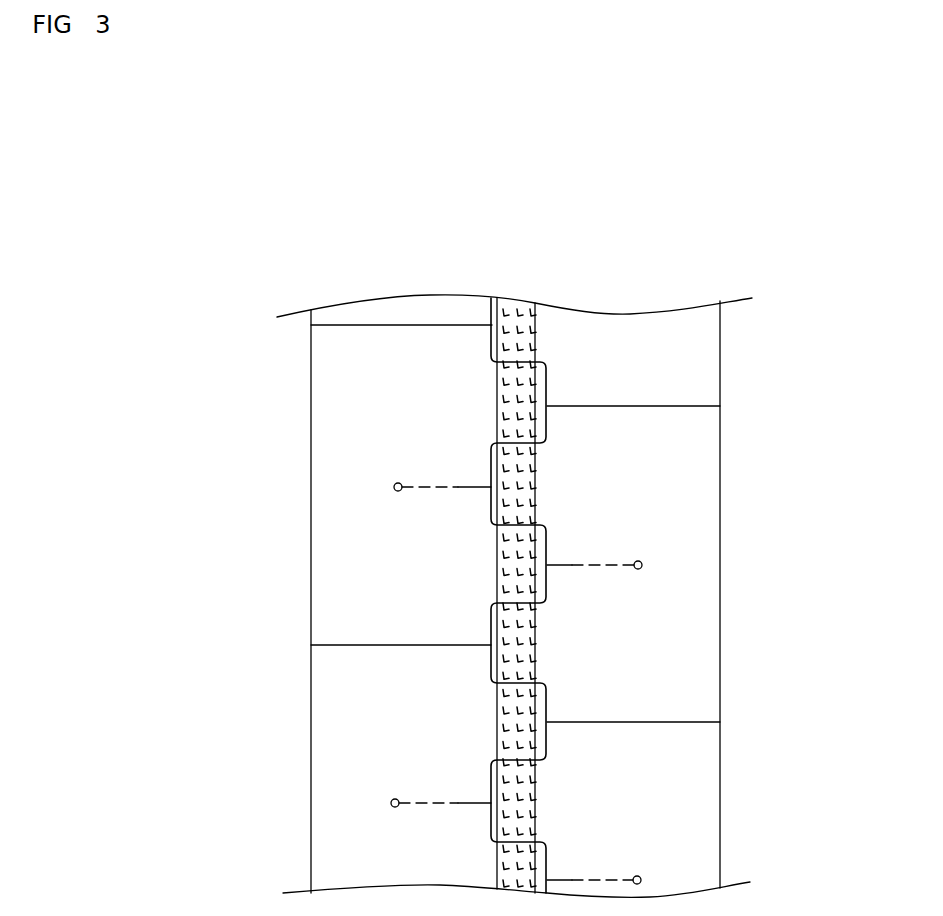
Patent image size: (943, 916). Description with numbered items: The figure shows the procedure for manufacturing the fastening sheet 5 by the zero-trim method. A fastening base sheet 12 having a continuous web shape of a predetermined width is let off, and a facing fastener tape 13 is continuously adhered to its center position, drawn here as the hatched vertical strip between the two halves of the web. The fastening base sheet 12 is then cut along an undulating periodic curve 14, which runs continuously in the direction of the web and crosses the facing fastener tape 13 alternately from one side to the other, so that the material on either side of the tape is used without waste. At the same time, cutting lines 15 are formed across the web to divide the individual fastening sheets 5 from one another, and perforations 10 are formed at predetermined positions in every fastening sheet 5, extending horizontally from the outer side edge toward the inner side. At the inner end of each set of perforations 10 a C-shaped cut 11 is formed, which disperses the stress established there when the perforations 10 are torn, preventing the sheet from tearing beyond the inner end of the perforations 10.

The fastening sheet 5 is at (310, 500).
The perforations 10 is at (438, 483).
The C-shaped cut 11 is at (397, 491).
The fastening base sheet 12 is at (722, 383).
The facing fastener tape 13 is at (537, 340).
The undulating periodic curve 14 is at (548, 390).
The cutting lines 15 is at (637, 407).